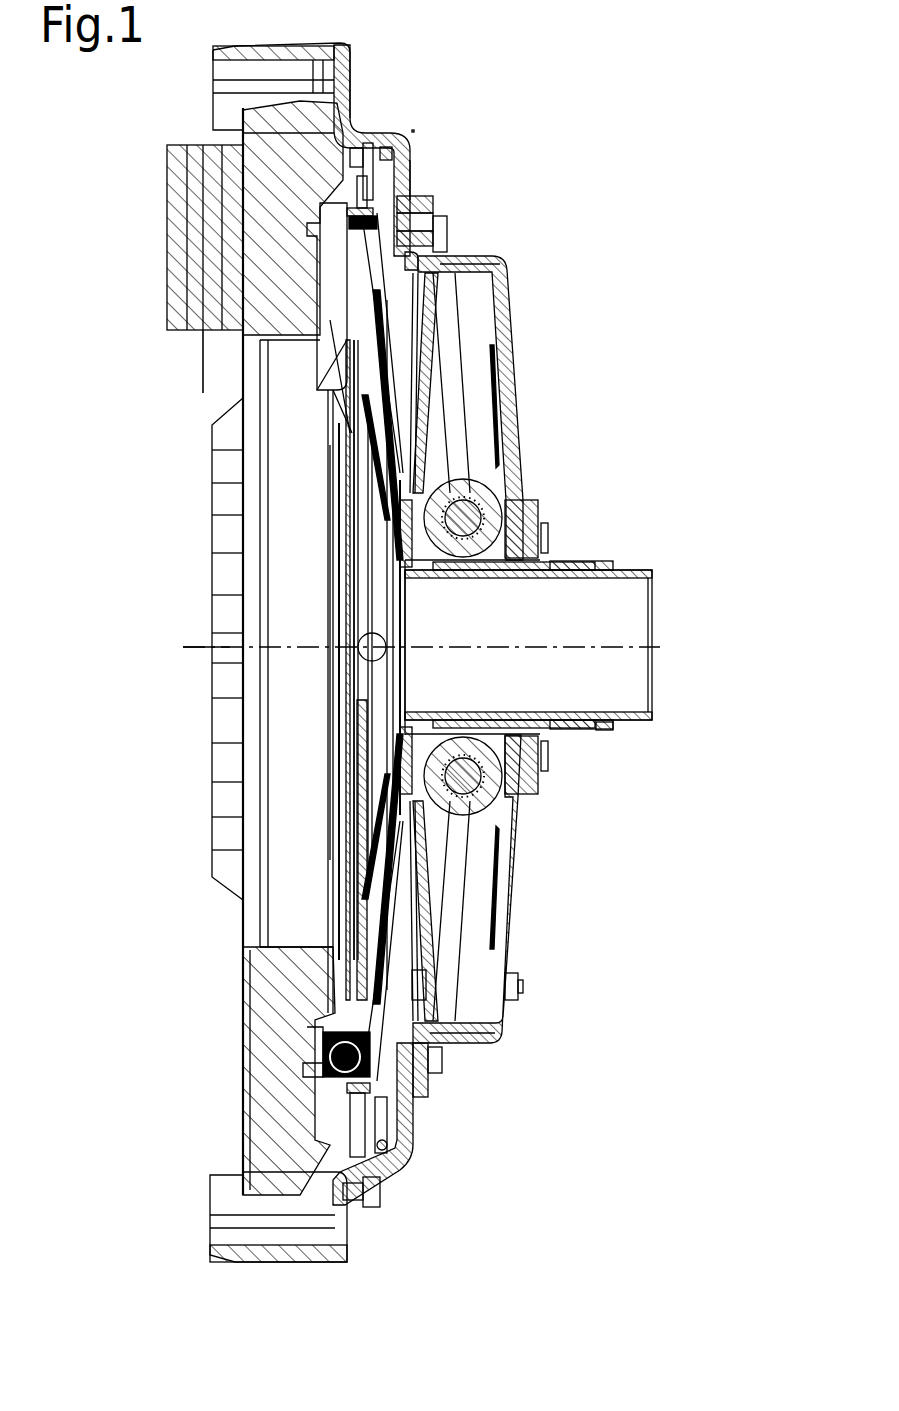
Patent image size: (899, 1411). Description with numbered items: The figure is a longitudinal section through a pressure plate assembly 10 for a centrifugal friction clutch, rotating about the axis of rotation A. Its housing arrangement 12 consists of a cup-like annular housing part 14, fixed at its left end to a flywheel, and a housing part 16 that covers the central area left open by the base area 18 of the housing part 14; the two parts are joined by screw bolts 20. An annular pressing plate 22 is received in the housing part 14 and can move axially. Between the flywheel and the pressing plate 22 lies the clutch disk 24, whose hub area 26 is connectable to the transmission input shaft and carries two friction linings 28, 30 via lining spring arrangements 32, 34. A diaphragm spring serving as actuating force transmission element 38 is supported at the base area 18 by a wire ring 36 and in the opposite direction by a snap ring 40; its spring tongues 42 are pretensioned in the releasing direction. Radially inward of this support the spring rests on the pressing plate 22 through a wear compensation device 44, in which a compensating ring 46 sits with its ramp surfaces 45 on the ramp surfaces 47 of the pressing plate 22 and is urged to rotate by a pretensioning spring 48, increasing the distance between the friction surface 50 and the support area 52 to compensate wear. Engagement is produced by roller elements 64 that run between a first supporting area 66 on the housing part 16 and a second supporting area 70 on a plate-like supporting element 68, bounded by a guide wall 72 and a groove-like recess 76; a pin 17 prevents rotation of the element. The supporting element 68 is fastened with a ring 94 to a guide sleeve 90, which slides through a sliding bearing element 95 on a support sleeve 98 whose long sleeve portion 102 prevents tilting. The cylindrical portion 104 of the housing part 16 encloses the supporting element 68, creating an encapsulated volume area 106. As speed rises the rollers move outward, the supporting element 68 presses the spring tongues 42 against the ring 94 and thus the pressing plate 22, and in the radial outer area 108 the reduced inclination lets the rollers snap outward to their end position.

The pressure plate assembly 10 is at (538, 140).
The housing arrangement 12 is at (394, 146).
The housing part 14 is at (335, 40).
The housing part 16 is at (512, 375).
The pin 17 is at (490, 967).
The base area 18 is at (410, 152).
The screw bolt 20 is at (420, 223).
The pressing plate 22 is at (250, 1045).
The clutch disk 24 is at (203, 393).
The hub area 26 is at (195, 365).
The friction lining 28 is at (178, 248).
The friction lining 30 is at (225, 220).
The lining spring arrangement 32 is at (195, 183).
The lining spring arrangement 34 is at (213, 162).
The wire ring 36 is at (400, 1165).
The actuating force transmission element 38 is at (440, 1065).
The snap ring 40 is at (320, 1125).
The spring tongues 42 is at (300, 807).
The wear compensation device 44 is at (280, 262).
The ramp surfaces 45 is at (347, 340).
The compensating ring 46 is at (272, 265).
The ramp surfaces 47 is at (447, 240).
The pretensioning spring 48 is at (357, 877).
The friction surface 50 is at (243, 988).
The support area 52 is at (445, 1097).
The roller elements 64 is at (515, 480).
The first supporting area 66 is at (492, 420).
The plate-like supporting element 68 is at (445, 310).
The second supporting area 70 is at (458, 352).
The guide wall 72 is at (500, 878).
The groove-like recess 76 is at (493, 927).
The guide sleeve 90 is at (625, 620).
The ring 94 is at (370, 520).
The sliding bearing element 95 is at (605, 732).
The support sleeve 98 is at (565, 560).
The sleeve portion 102 is at (605, 556).
The cylindrical portion 104 is at (500, 262).
The volume area 106 is at (513, 830).
The radial outer area 108 is at (503, 1023).
The axis of rotation A is at (188, 645).